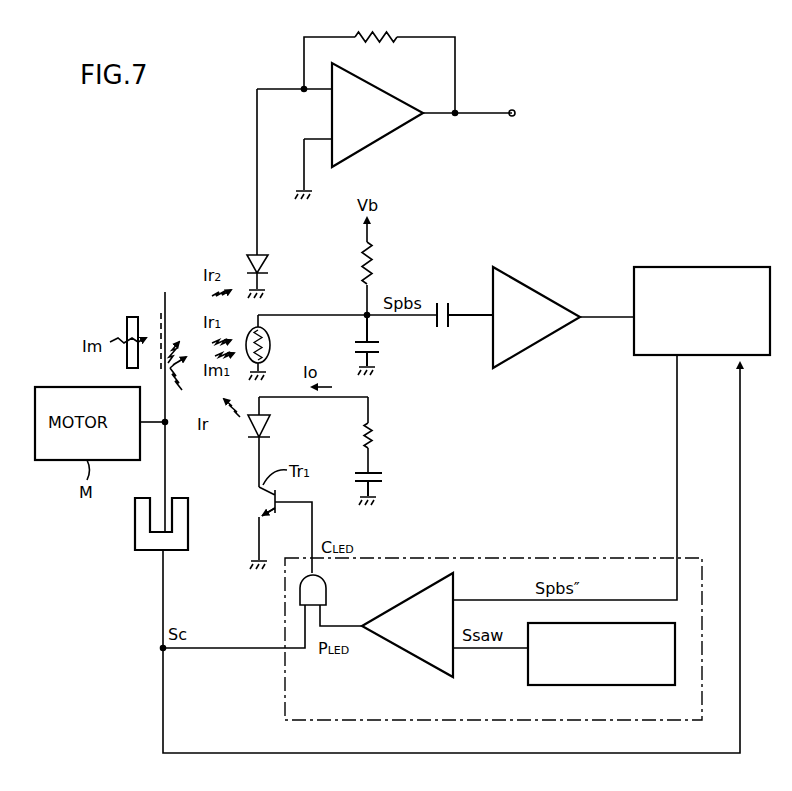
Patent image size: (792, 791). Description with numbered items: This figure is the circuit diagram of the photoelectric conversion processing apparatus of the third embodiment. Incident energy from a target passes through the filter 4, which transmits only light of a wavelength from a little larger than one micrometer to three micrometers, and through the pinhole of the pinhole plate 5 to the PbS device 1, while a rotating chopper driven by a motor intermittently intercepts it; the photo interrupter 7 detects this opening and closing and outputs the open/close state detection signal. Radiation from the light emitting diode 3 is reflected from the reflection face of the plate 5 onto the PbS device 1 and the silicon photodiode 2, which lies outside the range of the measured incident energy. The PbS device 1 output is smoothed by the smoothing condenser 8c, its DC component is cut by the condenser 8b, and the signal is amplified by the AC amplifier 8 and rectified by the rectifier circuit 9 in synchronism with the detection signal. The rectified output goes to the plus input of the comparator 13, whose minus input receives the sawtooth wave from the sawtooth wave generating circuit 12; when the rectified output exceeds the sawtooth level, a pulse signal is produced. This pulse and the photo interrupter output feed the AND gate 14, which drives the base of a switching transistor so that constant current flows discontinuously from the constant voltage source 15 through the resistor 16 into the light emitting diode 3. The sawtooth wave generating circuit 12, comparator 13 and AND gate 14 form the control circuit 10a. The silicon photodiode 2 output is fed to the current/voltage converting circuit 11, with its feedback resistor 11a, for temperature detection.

The PbS device 1 is at (270, 342).
The silicon photodiode 2 is at (270, 258).
The light emitting diode 3 is at (270, 422).
The filter 4 is at (130, 318).
The pinhole plate 5 is at (168, 292).
The photo interrupter 7 is at (180, 498).
The AC amplifier 8 is at (518, 278).
The condenser 8b is at (450, 305).
The smoothing condenser 8c is at (378, 354).
The rectifier circuit 9 is at (693, 265).
The control circuit 10a is at (425, 553).
The current/voltage converting circuit 11 is at (380, 130).
The feedback resistor 11a is at (373, 40).
The sawtooth wave generating circuit 12 is at (645, 685).
The comparator 13 is at (387, 635).
The AND gate 14 is at (327, 591).
The constant voltage source 15 is at (377, 473).
The resistor 16 is at (372, 423).